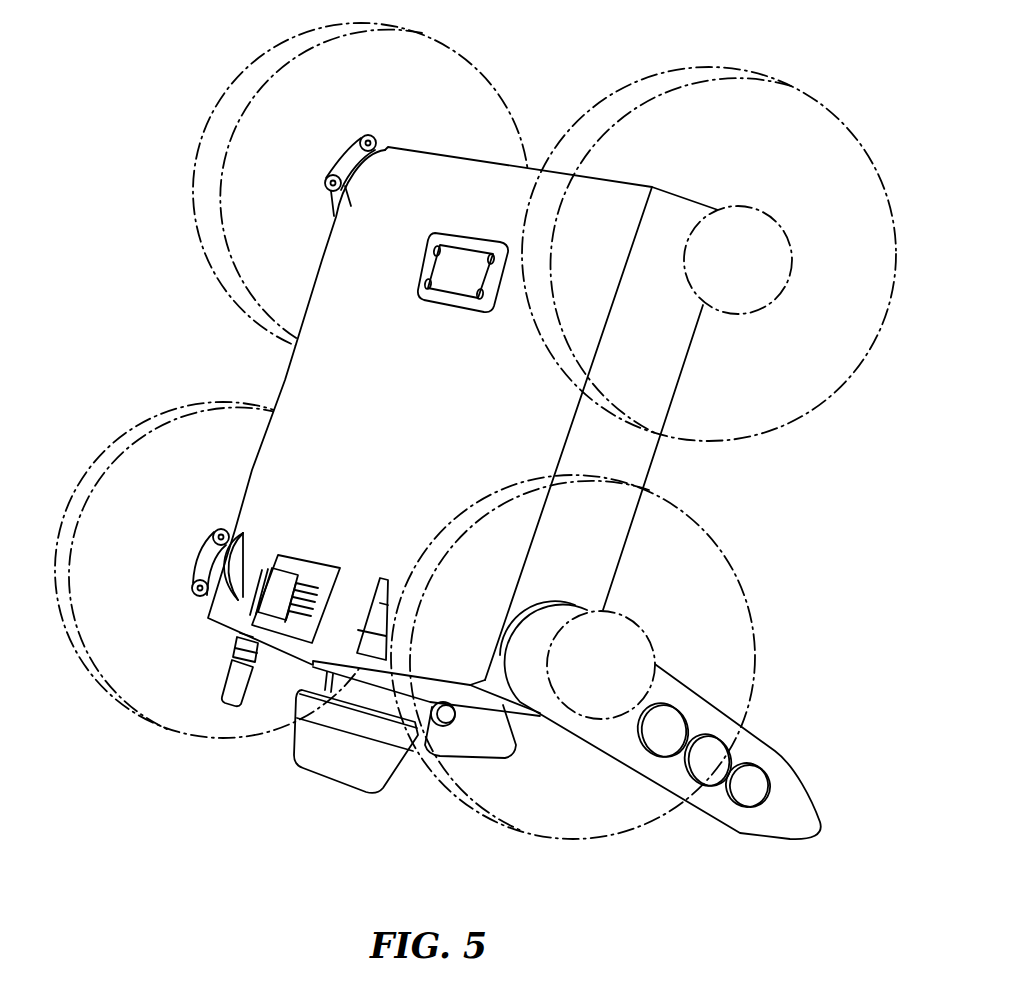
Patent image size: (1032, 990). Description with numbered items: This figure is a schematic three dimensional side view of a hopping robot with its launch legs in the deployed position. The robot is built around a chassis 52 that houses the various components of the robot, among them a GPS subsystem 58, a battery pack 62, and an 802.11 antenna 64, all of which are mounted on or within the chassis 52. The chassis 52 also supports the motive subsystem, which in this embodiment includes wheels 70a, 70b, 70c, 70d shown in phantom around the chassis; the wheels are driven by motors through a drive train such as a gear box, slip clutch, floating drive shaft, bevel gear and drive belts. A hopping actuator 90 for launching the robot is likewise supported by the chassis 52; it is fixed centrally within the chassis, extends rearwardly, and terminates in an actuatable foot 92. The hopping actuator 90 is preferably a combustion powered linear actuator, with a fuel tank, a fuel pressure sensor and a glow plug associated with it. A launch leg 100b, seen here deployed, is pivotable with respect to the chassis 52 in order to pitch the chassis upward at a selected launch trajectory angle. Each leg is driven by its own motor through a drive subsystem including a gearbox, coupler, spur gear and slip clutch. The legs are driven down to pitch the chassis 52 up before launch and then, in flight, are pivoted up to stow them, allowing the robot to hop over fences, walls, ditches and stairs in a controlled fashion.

The chassis 52 is at (460, 158).
The GPS subsystem 58 is at (470, 272).
The battery pack 62 is at (323, 573).
The 802.11 antenna 64 is at (227, 682).
The wheel 70a is at (830, 177).
The wheel 70b is at (738, 611).
The wheel 70c is at (167, 526).
The wheel 70d is at (330, 117).
The hopping actuator 90 is at (300, 688).
The actuatable foot 92 is at (323, 770).
The leg 100b is at (743, 833).